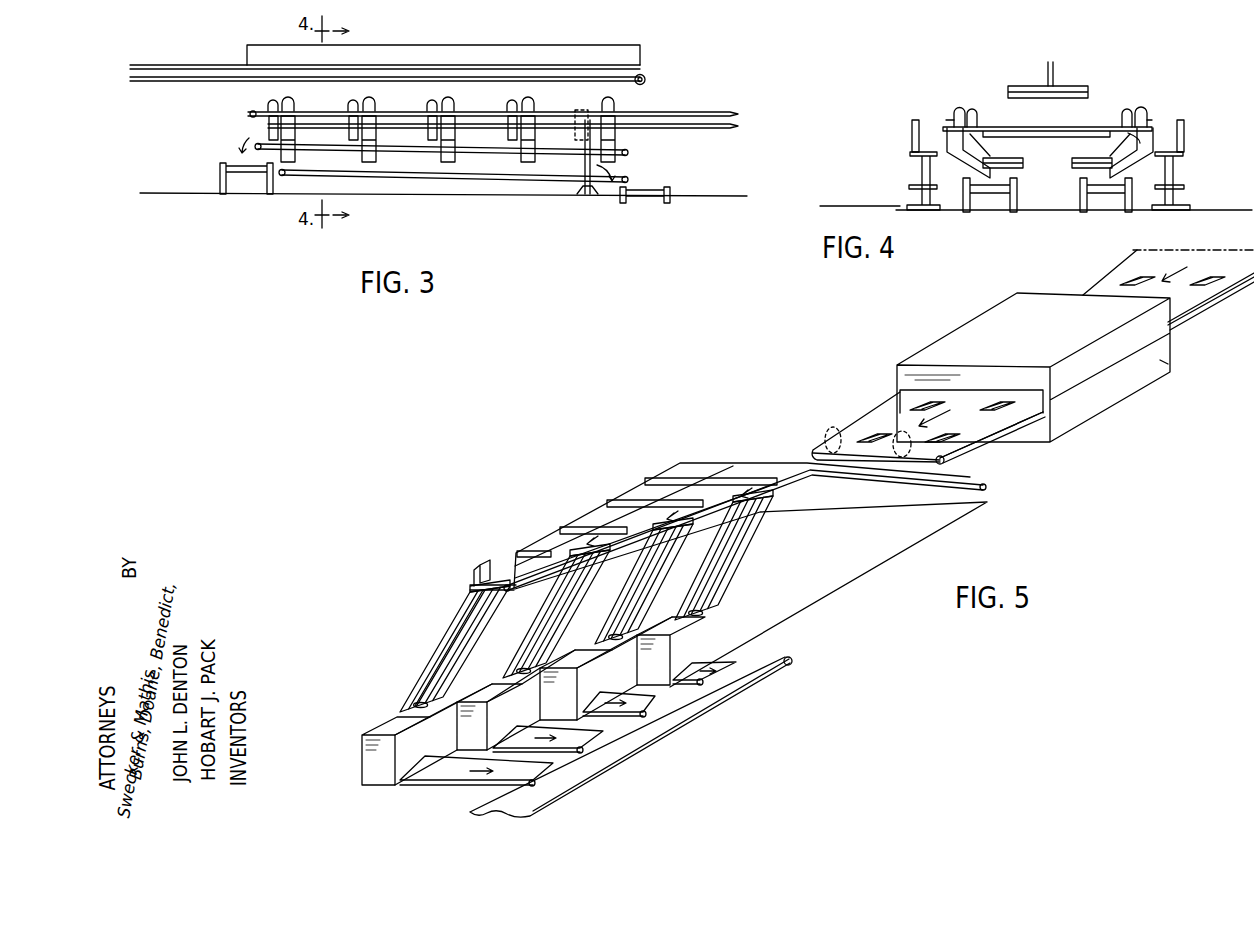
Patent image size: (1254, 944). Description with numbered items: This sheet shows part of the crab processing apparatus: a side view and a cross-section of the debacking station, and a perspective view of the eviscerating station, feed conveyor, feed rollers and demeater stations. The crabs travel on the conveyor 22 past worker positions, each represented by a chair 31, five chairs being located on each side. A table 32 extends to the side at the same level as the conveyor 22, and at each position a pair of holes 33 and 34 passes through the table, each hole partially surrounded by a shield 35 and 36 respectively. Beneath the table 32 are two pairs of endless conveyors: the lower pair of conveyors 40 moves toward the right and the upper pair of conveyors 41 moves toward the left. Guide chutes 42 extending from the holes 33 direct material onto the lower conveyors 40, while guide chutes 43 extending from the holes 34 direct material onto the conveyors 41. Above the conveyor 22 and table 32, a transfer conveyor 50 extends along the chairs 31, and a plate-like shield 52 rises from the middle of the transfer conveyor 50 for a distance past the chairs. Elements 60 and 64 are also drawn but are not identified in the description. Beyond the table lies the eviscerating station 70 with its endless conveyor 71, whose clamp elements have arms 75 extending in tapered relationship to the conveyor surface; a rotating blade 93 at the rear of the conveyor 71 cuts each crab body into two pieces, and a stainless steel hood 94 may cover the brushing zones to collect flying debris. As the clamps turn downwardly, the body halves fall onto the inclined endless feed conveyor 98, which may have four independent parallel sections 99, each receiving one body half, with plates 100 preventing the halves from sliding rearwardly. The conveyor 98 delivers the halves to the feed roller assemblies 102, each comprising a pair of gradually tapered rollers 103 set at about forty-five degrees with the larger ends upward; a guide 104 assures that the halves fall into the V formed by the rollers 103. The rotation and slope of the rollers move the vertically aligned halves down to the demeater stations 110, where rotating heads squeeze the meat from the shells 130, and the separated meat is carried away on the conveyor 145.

In FIG. 3, the conveyor 22 is at (678, 112).
In FIG. 4, the conveyor 22 is at (1001, 126).
In FIG. 4, the chair 31 is at (912, 136).
In FIG. 3, the table 32 is at (341, 111).
In FIG. 4, the table 32 is at (952, 122).
In FIG. 4, the hole 33 is at (1141, 143).
In FIG. 4, the hole 34 is at (1110, 155).
In FIG. 3, the shield 35 is at (529, 112).
In FIG. 4, the shield 35 is at (955, 111).
In FIG. 3, the shield 36 is at (507, 109).
In FIG. 4, the shield 36 is at (1127, 110).
In FIG. 3, the lower pair of conveyors 40 is at (453, 182).
In FIG. 4, the lower pair of conveyors 40 is at (1081, 192).
In FIG. 3, the upper pair of conveyors 41 is at (388, 157).
In FIG. 4, the upper pair of conveyors 41 is at (1021, 166).
In FIG. 3, the guide chute 42 is at (525, 128).
In FIG. 4, the guide chute 42 is at (967, 164).
In FIG. 3, the guide chute 43 is at (506, 134).
In FIG. 4, the guide chute 43 is at (962, 128).
In FIG. 3, the transfer conveyor 50 is at (203, 65).
In FIG. 4, the transfer conveyor 50 is at (1047, 79).
In FIG. 3, the plate-like shield 52 is at (435, 50).
In FIG. 4, the plate-like shield 52 is at (1054, 78).
In FIG. 3, the end stop 60 is at (640, 187).
In FIG. 3, the end stop 64 is at (238, 162).
In FIG. 5, the eviscerating station 70 is at (952, 324).
In FIG. 5, the endless type conveyor 71 is at (1106, 287).
In FIG. 5, the arm 75 is at (1011, 414).
In FIG. 5, the rotating blade 93 is at (838, 428).
In FIG. 5, the stainless steel hood 94 is at (1158, 360).
In FIG. 5, the feed conveyor 98 is at (731, 449).
In FIG. 5, the section 99 is at (667, 488).
In FIG. 5, the plate 100 is at (645, 481).
In FIG. 5, the feed roller assembly 102 is at (442, 665).
In FIG. 5, the roller 103 is at (470, 620).
In FIG. 5, the guide 104 is at (484, 566).
In FIG. 5, the demeater station 110 is at (392, 728).
In FIG. 5, the shells 130 is at (477, 640).
In FIG. 5, the conveyor 145 is at (460, 773).